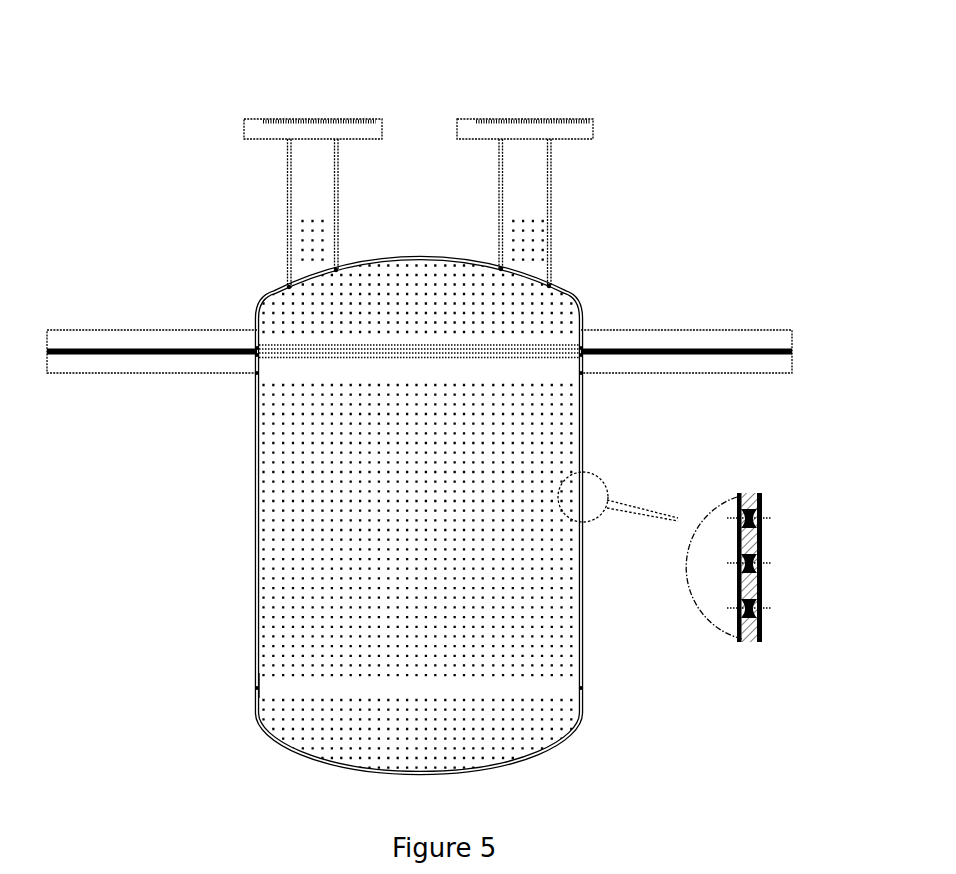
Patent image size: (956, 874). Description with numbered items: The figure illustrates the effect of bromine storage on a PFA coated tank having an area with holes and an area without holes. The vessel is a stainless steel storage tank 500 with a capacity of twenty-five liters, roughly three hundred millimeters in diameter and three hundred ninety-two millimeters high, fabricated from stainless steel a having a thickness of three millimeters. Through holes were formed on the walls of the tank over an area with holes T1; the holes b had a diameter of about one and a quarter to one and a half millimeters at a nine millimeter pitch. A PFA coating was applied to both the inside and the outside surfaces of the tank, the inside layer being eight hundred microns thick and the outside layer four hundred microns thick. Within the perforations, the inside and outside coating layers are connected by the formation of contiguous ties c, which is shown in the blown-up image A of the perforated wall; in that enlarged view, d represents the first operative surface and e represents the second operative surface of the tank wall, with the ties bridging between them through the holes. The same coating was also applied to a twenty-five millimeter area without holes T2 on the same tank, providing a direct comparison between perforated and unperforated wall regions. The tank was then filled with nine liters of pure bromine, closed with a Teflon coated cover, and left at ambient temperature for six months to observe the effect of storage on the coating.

The stainless steel tank 500 is at (182, 119).
The area with holes formed on the walls of the tank T1 is at (316, 420).
The area without holes formed on the walls of the tank T2 is at (258, 698).
The stainless steel a is at (250, 500).
The holes b is at (366, 494).
The blown up image of the area having holes A is at (618, 486).
The contiguous ties c is at (771, 559).
The first operative surface d is at (779, 567).
The second operative surface e is at (712, 567).